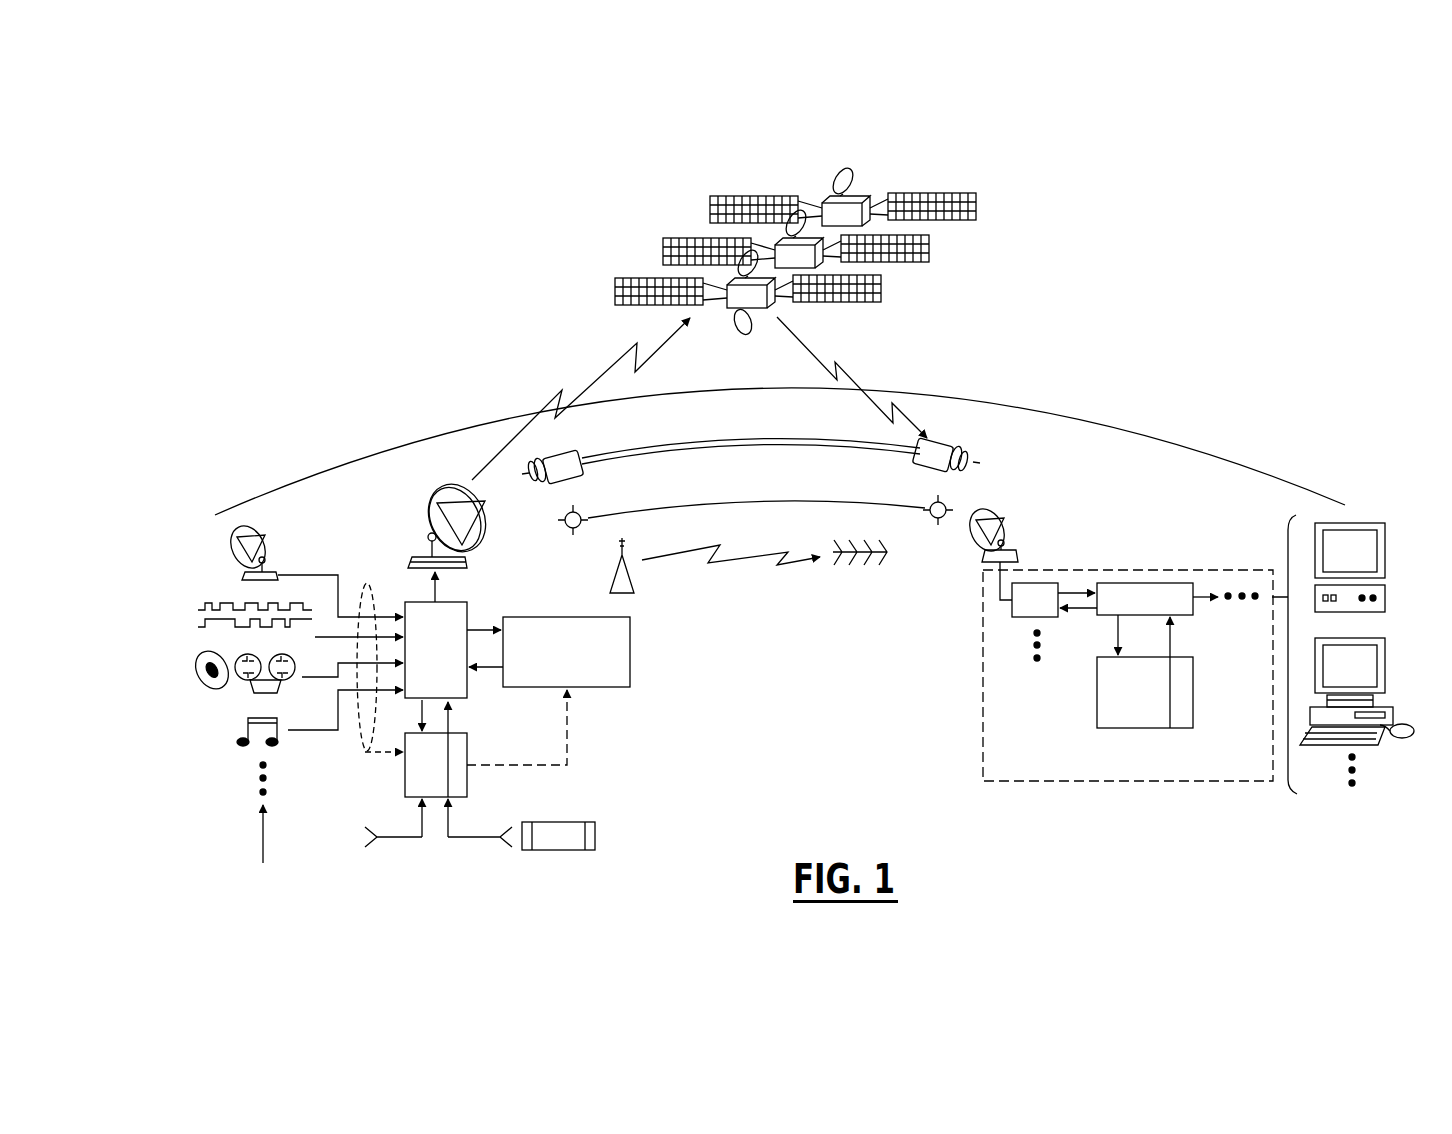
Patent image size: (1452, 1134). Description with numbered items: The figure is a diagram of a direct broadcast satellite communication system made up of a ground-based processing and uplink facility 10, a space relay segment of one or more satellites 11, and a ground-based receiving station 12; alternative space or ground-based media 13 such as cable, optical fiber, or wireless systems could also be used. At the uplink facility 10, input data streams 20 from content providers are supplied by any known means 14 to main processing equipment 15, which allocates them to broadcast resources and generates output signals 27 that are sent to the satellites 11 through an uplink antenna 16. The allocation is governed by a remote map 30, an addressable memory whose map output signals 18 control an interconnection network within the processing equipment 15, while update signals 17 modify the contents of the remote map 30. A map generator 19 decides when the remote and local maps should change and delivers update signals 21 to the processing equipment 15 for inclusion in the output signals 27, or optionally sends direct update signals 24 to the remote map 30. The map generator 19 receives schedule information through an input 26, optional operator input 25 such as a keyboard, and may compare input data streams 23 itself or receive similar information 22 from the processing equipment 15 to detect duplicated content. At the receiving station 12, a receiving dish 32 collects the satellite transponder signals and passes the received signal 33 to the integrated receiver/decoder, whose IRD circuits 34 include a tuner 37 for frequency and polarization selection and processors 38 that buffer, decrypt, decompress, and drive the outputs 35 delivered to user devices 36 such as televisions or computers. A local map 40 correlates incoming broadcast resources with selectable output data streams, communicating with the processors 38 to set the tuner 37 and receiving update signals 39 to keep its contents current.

The ground-based processing and uplink facility 10 is at (612, 735).
The satellites 11 is at (1000, 207).
The receiving station 12 is at (950, 758).
The other space or ground-based media 13 is at (761, 590).
The known means 14 is at (262, 831).
The main processing equipment 15 is at (470, 605).
The uplink antenna 16 is at (428, 508).
The update signals 17 is at (477, 628).
The map output signals 18 is at (497, 669).
The map generator 19 is at (403, 782).
The input data streams 20 is at (362, 566).
The update signals 21 is at (450, 720).
The similar information 22 is at (420, 715).
The input data streams 23 is at (365, 748).
The direct update signals 24 is at (527, 768).
The operator input 25 is at (480, 840).
The input 26 is at (397, 840).
The output signals 27 is at (423, 578).
The remote map 30 is at (632, 622).
The receiving dish 32 is at (1002, 522).
The received signal 33 is at (1000, 602).
The IRD circuits 34 is at (1105, 792).
The outputs 35 is at (1282, 597).
The user devices 36 is at (1383, 756).
The tuner 37 is at (1017, 618).
The processors 38 is at (1133, 583).
The update signals 39 is at (1118, 633).
The local map 40 is at (1193, 683).